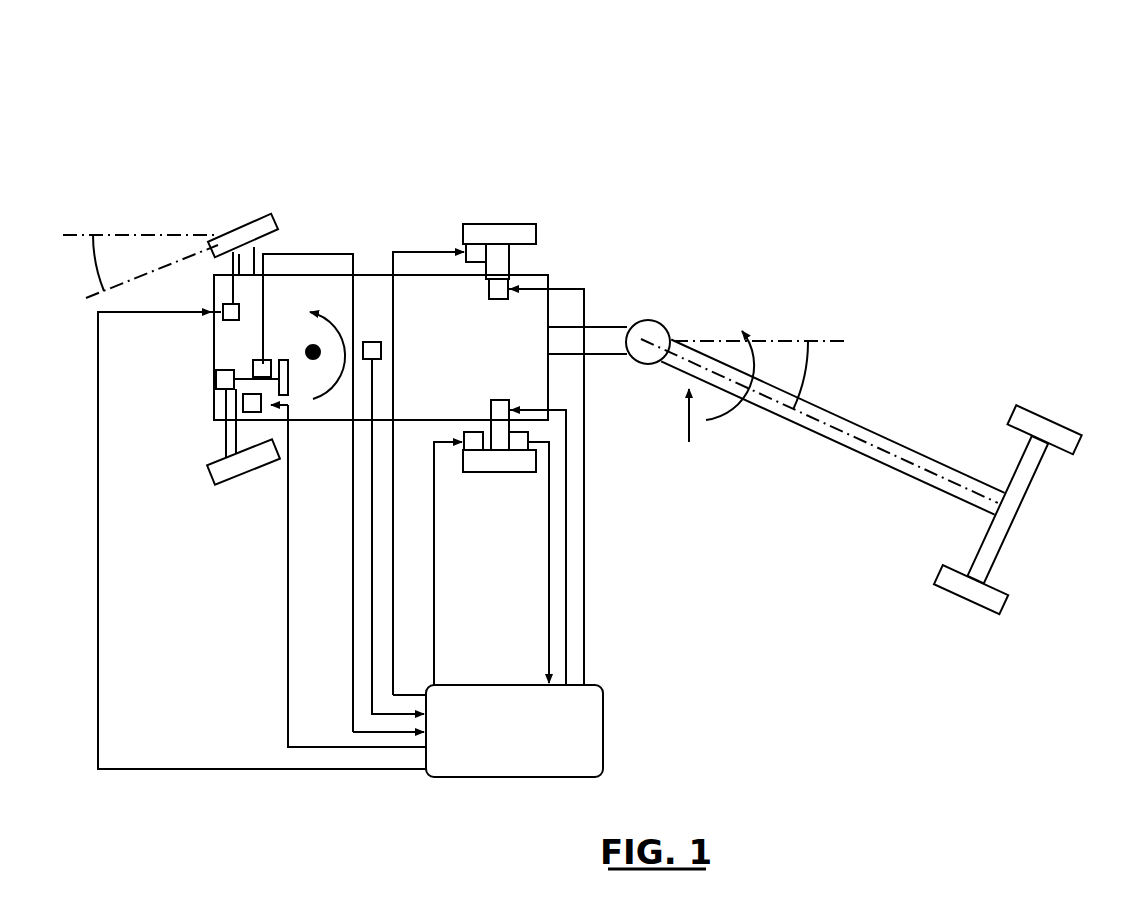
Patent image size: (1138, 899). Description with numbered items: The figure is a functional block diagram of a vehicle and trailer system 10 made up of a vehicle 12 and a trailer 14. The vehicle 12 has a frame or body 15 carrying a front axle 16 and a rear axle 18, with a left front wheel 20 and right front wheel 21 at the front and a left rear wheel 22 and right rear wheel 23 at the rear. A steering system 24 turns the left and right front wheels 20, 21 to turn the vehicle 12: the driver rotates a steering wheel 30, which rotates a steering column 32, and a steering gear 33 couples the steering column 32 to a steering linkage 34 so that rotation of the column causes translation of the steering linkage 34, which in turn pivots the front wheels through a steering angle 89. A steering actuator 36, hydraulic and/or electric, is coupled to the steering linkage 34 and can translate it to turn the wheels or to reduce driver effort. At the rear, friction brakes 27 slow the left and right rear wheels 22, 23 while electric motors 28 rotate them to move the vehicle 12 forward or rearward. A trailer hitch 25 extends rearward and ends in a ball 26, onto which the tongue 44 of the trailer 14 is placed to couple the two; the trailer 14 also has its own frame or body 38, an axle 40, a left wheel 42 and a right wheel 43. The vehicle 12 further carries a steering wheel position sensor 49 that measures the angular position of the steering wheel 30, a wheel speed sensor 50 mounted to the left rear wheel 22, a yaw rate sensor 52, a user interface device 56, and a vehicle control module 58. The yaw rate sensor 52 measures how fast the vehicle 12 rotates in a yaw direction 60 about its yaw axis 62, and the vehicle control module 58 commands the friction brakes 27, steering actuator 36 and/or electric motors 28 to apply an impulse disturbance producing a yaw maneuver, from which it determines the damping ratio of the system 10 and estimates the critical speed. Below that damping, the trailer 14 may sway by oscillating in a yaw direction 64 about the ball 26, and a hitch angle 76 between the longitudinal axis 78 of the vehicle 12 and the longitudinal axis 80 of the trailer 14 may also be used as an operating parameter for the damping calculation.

The vehicle and trailer system 10 is at (125, 41).
The vehicle 12 is at (155, 156).
The trailer 14 is at (1012, 268).
The frame or body 15 is at (372, 272).
The front axle 16 is at (262, 252).
The rear axle 18 is at (508, 260).
The left front wheel 20 is at (247, 475).
The right front wheel 21 is at (225, 228).
The left rear wheel 22 is at (482, 472).
The right rear wheel 23 is at (513, 228).
The steering system 24 is at (193, 402).
The trailer hitch 25 is at (603, 353).
The ball 26 is at (640, 316).
The friction brakes 27 is at (478, 260).
The electric motors 28 is at (488, 288).
The steering wheel 30 is at (287, 388).
The steering column 32 is at (242, 372).
The steering gear 33 is at (215, 380).
The steering linkage 34 is at (228, 268).
The steering actuator 36 is at (218, 307).
The frame or body 38 is at (842, 447).
The axle 40 is at (1023, 438).
The left wheel 42 is at (952, 595).
The right wheel 43 is at (1037, 412).
The tongue 44 is at (674, 422).
The steering wheel position sensor 49 is at (257, 358).
The wheel speed sensor 50 is at (518, 452).
The yaw rate sensor 52 is at (380, 348).
The user interface device 56 is at (253, 410).
The vehicle control module 58 is at (480, 680).
The yaw direction 60 is at (333, 390).
The yaw axis 62 is at (305, 343).
The yaw direction 64 is at (705, 418).
The hitch angle 76 is at (823, 375).
The longitudinal axis 78 is at (800, 337).
The longitudinal axis 80 is at (797, 410).
The steering angle 89 is at (77, 263).